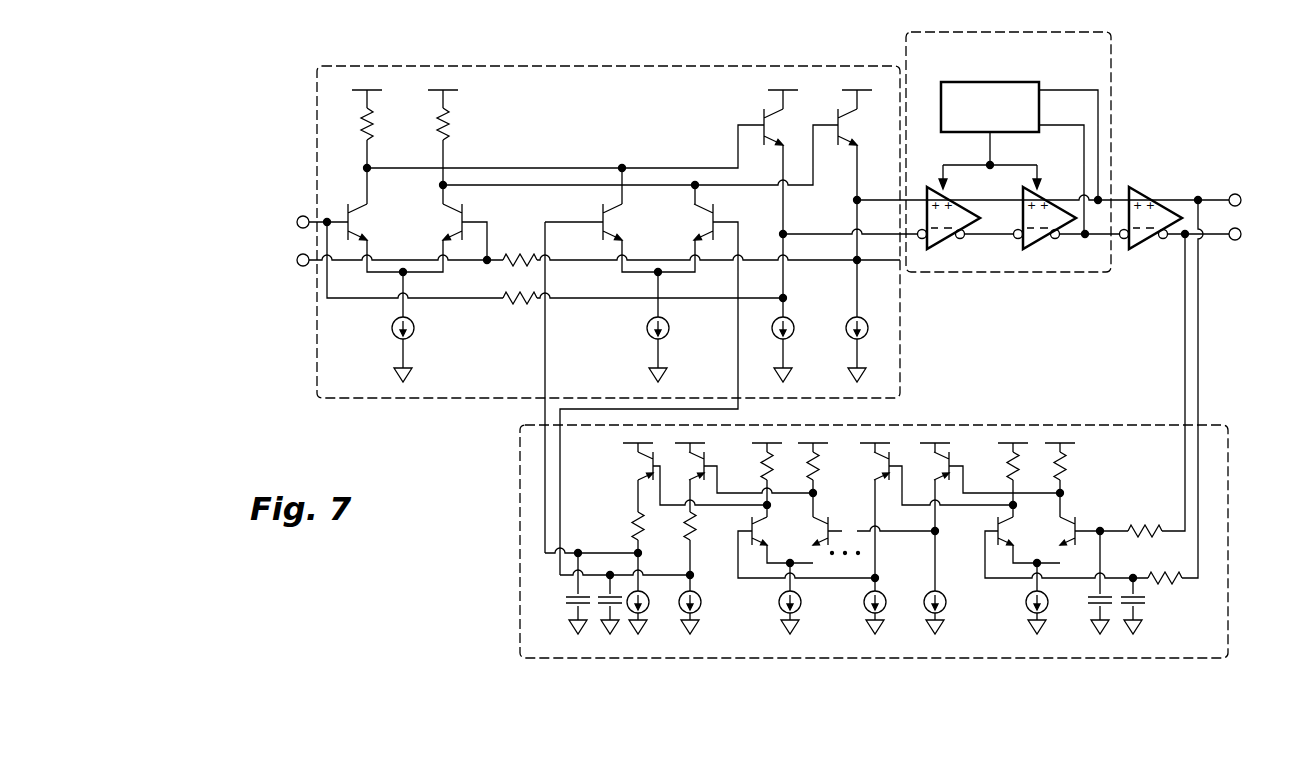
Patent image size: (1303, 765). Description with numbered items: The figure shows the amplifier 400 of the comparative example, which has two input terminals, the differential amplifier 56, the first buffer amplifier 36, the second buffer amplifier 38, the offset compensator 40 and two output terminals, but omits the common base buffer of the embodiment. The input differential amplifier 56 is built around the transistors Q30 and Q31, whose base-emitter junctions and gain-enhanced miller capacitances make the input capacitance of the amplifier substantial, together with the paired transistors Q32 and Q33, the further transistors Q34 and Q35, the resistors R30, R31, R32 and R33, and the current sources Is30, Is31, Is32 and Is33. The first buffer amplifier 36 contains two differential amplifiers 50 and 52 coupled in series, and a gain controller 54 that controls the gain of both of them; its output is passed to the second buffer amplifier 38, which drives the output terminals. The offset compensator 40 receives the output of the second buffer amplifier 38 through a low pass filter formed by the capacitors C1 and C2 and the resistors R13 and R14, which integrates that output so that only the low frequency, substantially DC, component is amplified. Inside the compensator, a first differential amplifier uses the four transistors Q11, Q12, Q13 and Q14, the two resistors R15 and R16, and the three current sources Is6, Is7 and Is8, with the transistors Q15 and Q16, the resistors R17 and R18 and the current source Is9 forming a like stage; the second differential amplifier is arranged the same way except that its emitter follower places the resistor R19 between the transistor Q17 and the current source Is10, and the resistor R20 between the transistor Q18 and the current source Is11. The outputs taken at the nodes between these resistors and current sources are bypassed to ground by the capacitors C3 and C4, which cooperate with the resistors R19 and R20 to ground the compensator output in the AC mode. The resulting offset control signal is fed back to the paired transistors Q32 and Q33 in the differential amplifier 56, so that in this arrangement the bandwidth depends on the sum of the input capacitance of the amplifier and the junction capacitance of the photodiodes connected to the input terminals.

The amplifier 400 is at (1172, 92).
The differential amplifier 56 is at (705, 66).
The first buffer amplifier 36 is at (1111, 44).
The gain controller 54 is at (985, 82).
The differential amplifier 50 is at (931, 188).
The differential amplifier 52 is at (1040, 194).
The second buffer amplifier 38 is at (1146, 193).
The offset compensator 40 is at (1005, 425).
The transistor Q30 is at (367, 222).
The transistor Q31 is at (443, 222).
The transistor Q32 is at (623, 222).
The transistor Q33 is at (694, 222).
The transistor Q34 is at (767, 115).
The transistor Q35 is at (859, 117).
The resistor R30 is at (355, 147).
The resistor R31 is at (431, 147).
The resistor R32 is at (520, 249).
The resistor R33 is at (520, 315).
The current source Is30 is at (416, 327).
The current source Is31 is at (675, 327).
The current source Is32 is at (797, 349).
The current source Is33 is at (870, 349).
The transistor Q11 is at (1056, 530).
The transistor Q12 is at (1017, 531).
The transistor Q13 is at (950, 517).
The transistor Q14 is at (869, 517).
The transistor Q15 is at (831, 522).
The transistor Q16 is at (773, 531).
The transistor Q17 is at (686, 477).
The transistor Q18 is at (633, 477).
The resistor R13 is at (1145, 517).
The resistor R14 is at (1165, 567).
The resistor R15 is at (1071, 480).
The resistor R16 is at (1023, 480).
The resistor R17 is at (824, 480).
The resistor R18 is at (757, 480).
The resistor R19 is at (704, 543).
The resistor R20 is at (623, 532).
The capacitor C1 is at (1143, 606).
The capacitor C2 is at (1090, 582).
The capacitor C3 is at (566, 593).
The capacitor C4 is at (618, 610).
The current source Is6 is at (1025, 598).
The current source Is7 is at (947, 612).
The current source Is8 is at (886, 612).
The current source Is9 is at (800, 599).
The current source Is10 is at (704, 604).
The current source Is11 is at (652, 593).